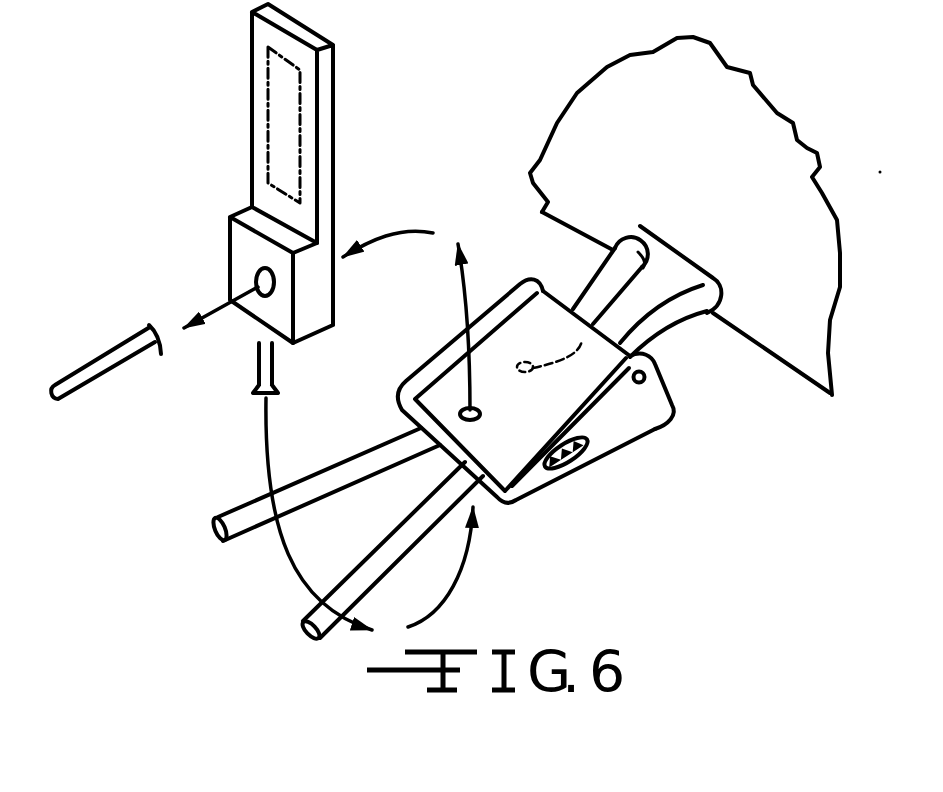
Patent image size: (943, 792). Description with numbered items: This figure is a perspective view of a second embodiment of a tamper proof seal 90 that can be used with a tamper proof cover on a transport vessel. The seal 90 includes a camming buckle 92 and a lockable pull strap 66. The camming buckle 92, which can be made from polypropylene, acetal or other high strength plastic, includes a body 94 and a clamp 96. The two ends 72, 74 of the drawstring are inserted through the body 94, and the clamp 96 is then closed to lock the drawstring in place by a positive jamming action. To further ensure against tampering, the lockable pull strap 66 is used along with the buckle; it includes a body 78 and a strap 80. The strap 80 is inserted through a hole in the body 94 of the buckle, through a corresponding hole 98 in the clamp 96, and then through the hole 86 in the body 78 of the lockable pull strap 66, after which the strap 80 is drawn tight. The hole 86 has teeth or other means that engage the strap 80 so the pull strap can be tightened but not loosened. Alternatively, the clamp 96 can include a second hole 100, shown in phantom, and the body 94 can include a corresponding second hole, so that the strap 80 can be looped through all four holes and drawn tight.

The lockable pull strap 66 is at (335, 242).
The end of the drawstring 72 is at (293, 497).
The end of the drawstring 74 is at (382, 562).
The body 78 is at (242, 262).
The strap 80 is at (262, 350).
The hole 86 is at (257, 280).
The tamper proof seal 90 is at (728, 550).
The camming buckle 92 is at (655, 429).
The body 94 is at (603, 435).
The clamp 96 is at (543, 310).
The hole 98 is at (483, 417).
The second hole 100 is at (583, 344).